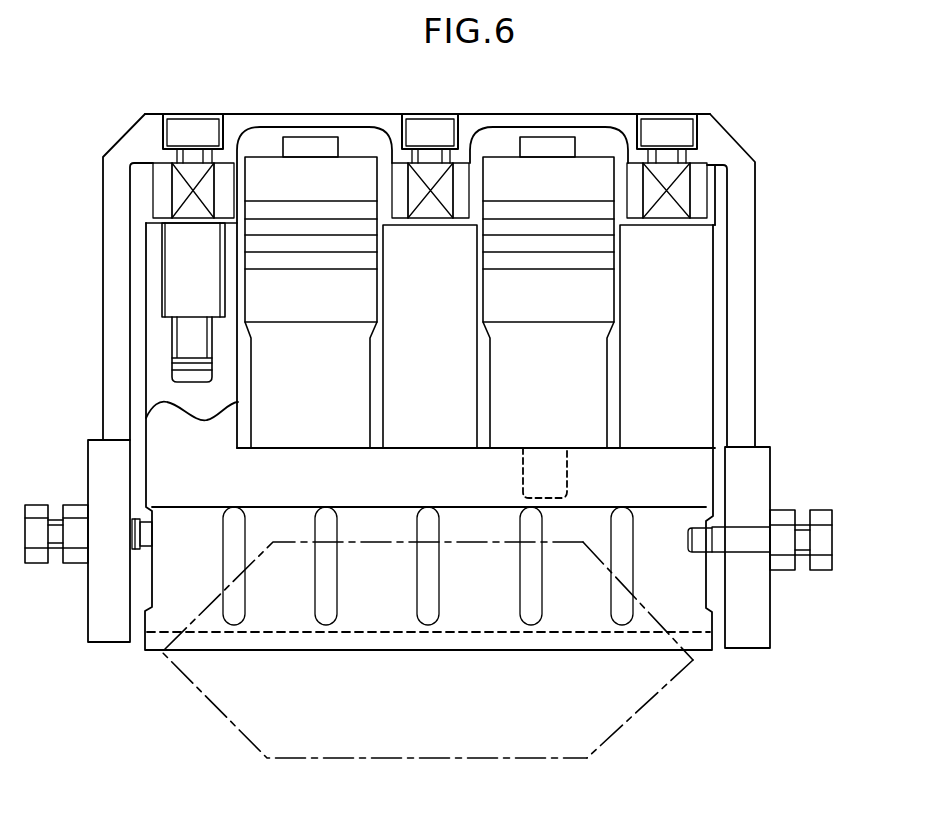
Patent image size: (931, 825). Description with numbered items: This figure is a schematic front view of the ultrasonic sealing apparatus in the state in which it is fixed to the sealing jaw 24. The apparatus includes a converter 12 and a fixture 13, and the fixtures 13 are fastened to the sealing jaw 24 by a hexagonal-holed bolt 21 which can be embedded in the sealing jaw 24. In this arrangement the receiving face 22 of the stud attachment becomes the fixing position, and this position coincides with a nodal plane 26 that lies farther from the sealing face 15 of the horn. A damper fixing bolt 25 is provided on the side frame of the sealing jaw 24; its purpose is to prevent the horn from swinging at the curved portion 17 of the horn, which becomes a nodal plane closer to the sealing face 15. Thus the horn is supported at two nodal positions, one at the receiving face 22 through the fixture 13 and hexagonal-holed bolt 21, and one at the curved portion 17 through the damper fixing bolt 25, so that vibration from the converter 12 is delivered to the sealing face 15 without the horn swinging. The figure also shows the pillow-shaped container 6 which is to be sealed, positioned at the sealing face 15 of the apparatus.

The pillow-shaped container 6 is at (427, 758).
The converter 12 is at (593, 157).
The fixture 13 is at (715, 323).
The sealing face 15 is at (612, 652).
The curved portion 17 is at (198, 572).
The hexagonal-holed bolt 21 is at (163, 139).
The receiving face of stud attachment 22 is at (163, 300).
The sealing jaw 24 is at (338, 113).
The damper fixing bolt 25 is at (832, 545).
The nodal plane 26 is at (162, 326).